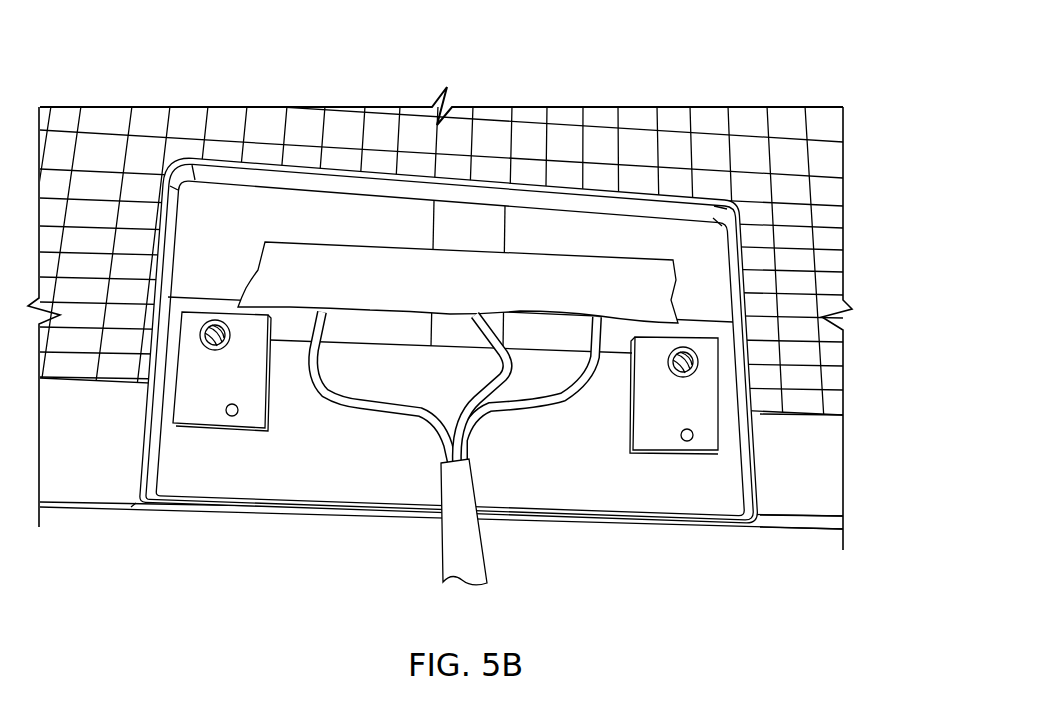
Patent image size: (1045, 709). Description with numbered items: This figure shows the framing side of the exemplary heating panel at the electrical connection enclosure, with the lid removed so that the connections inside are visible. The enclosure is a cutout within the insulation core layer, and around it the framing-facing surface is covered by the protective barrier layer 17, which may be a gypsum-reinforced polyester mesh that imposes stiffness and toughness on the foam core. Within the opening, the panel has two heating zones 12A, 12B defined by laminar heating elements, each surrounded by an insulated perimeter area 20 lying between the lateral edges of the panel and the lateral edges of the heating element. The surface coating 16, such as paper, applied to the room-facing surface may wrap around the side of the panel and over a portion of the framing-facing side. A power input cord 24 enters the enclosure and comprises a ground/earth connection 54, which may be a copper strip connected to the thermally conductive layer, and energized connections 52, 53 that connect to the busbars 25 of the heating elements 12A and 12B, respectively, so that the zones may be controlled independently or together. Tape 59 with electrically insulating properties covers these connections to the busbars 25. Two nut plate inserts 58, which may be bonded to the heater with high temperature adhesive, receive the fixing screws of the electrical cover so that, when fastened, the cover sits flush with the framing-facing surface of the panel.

The protective barrier layer 17 is at (826, 213).
The insulated perimeter area 20 is at (409, 499).
The surface coating 16 is at (814, 499).
The busbars 25 is at (176, 312).
The heating zone 12A is at (411, 237).
The heating zone 12B is at (573, 243).
The tape 59 is at (409, 301).
The nut plate inserts 58 is at (242, 388).
The energized connection 52 is at (313, 348).
The energized connection 53 is at (590, 370).
The ground/earth connection 54 is at (487, 337).
The power input cord 24 is at (460, 538).